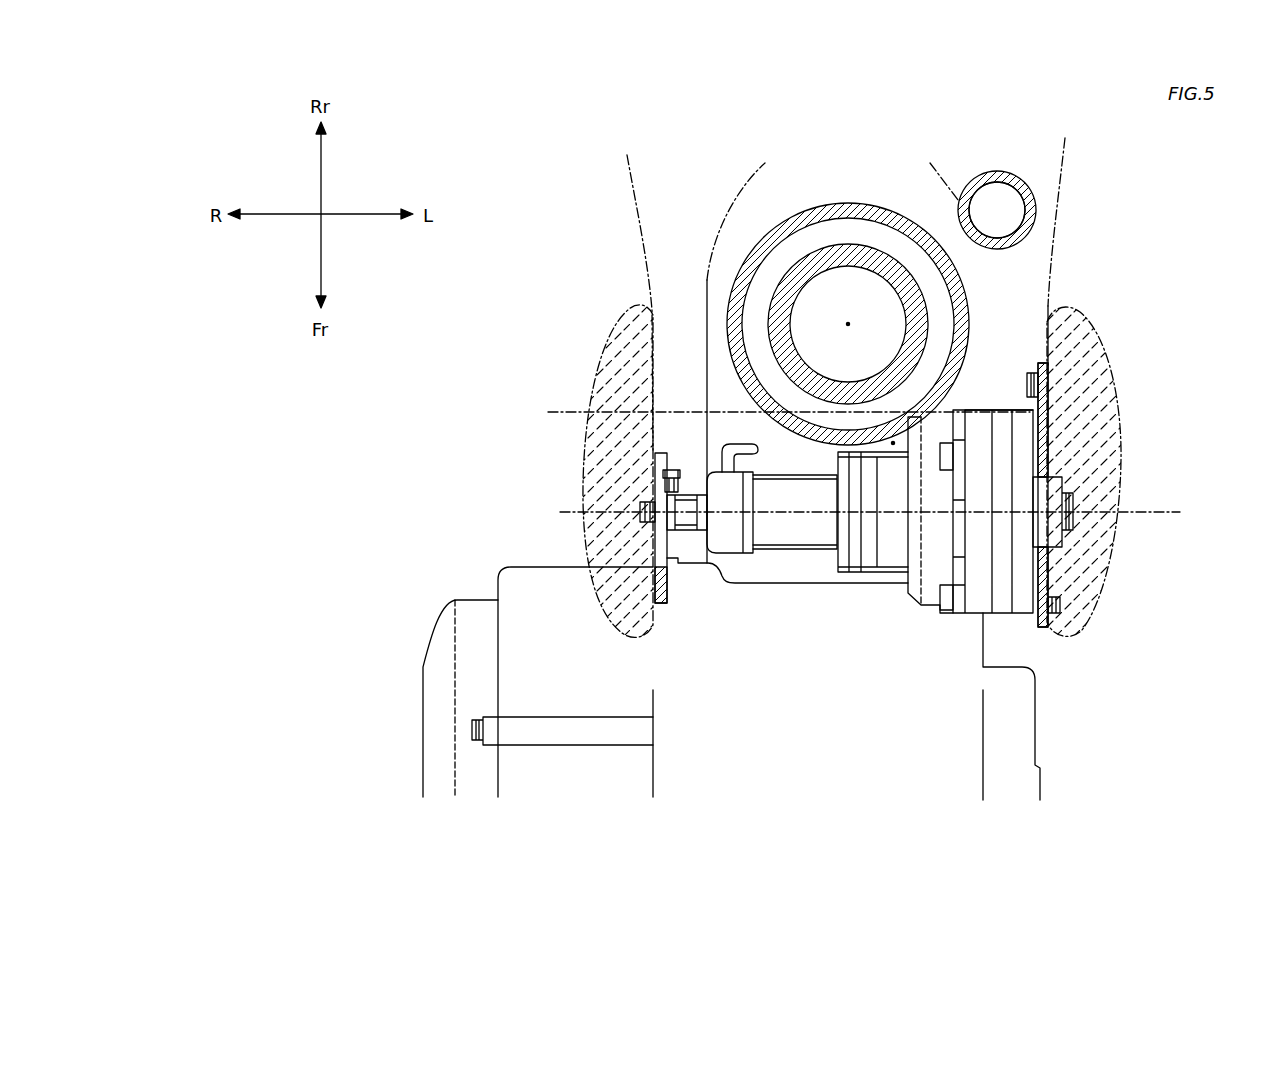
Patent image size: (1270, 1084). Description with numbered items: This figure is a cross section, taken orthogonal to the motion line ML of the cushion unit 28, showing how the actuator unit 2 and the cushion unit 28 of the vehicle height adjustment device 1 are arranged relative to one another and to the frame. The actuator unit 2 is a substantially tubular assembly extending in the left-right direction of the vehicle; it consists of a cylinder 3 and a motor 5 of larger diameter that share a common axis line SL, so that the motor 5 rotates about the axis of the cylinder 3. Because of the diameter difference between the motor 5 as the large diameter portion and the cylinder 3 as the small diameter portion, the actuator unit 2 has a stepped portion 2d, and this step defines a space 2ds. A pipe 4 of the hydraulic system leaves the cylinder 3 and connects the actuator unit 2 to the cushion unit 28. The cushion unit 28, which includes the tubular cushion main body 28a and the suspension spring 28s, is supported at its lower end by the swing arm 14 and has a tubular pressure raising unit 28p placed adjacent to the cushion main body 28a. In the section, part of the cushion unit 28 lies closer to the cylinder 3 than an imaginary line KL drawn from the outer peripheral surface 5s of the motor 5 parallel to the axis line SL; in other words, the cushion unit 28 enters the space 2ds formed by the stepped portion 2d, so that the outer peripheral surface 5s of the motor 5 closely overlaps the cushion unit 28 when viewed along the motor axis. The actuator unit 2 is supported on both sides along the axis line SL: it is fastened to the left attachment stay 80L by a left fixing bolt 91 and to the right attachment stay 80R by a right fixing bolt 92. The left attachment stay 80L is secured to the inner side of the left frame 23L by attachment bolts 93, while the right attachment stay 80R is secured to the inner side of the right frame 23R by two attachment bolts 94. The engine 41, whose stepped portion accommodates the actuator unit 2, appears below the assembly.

The vehicle height adjustment device 1 is at (860, 690).
The actuator unit 2 is at (844, 620).
The stepped portion 2d is at (882, 455).
The space 2ds is at (893, 443).
The cylinder 3 is at (770, 543).
The pipe 4 is at (758, 450).
The motor 5 is at (930, 590).
The outer peripheral surface 5s is at (973, 410).
The swing arm 14 is at (730, 222).
The right frame 23R is at (605, 327).
The left frame 23L is at (1107, 570).
The cushion unit 28 is at (917, 216).
The cushion main body 28a is at (800, 268).
The suspension spring 28s is at (880, 206).
The pressure raising unit 28p is at (1038, 208).
The engine 41 is at (515, 565).
The right attachment stay 80R is at (655, 457).
The left attachment stay 80L is at (1048, 453).
The left fixing bolt 91 is at (1077, 507).
The right fixing bolt 92 is at (640, 512).
The attachment bolts 93 is at (1022, 378).
The attachment bolts 94 is at (685, 478).
The imaginary line KL is at (549, 412).
The axis line SL is at (566, 515).
The motion line ML is at (848, 324).